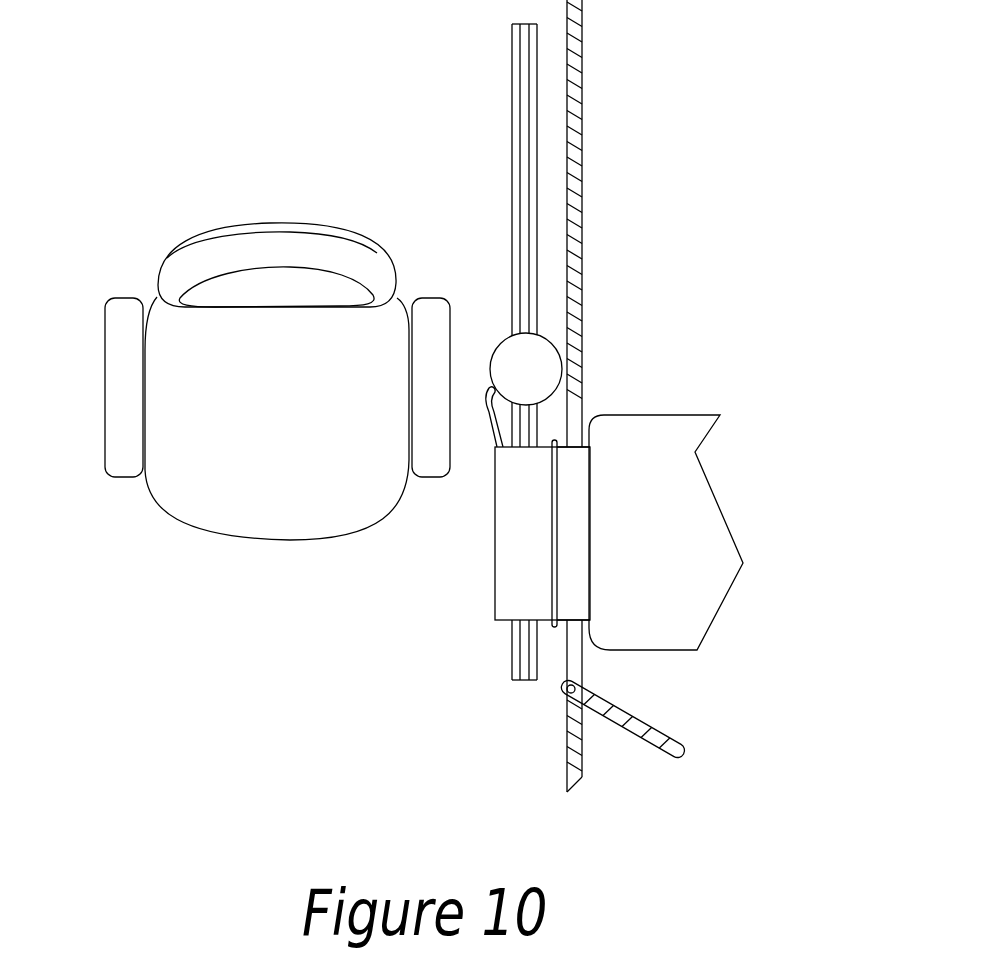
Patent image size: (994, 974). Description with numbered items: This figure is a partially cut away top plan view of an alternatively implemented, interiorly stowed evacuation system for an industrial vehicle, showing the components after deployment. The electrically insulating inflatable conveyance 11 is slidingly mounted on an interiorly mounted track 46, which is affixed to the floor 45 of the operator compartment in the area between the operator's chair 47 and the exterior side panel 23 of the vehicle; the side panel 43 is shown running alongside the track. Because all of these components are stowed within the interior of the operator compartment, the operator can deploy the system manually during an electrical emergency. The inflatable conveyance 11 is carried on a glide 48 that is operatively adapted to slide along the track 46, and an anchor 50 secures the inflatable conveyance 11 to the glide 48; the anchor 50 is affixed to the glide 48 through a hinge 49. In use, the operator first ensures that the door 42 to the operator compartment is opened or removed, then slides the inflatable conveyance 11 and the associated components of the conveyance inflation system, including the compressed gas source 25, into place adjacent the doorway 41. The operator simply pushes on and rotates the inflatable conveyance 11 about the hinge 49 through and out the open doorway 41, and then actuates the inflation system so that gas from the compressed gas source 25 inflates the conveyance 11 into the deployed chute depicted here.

The electrically insulating inflatable conveyance 11 is at (693, 512).
The exterior side panel 23 is at (268, 740).
The compressed gas source 25 is at (505, 358).
The doorway 41 is at (573, 658).
The door 42 is at (657, 752).
The exterior side panel 43 is at (586, 175).
The floor 45 is at (345, 641).
The track 46 is at (517, 108).
The operator's chair 47 is at (240, 505).
The glide 48 is at (507, 595).
The hinge 49 is at (562, 520).
The anchor 50 is at (573, 597).